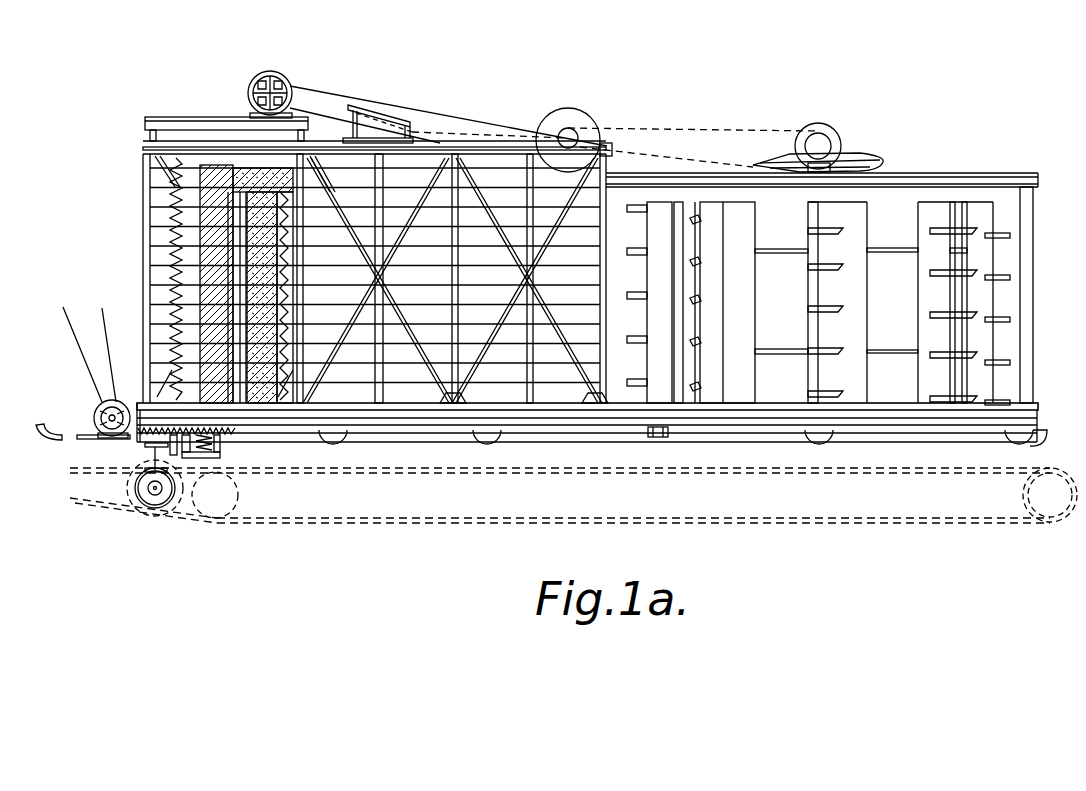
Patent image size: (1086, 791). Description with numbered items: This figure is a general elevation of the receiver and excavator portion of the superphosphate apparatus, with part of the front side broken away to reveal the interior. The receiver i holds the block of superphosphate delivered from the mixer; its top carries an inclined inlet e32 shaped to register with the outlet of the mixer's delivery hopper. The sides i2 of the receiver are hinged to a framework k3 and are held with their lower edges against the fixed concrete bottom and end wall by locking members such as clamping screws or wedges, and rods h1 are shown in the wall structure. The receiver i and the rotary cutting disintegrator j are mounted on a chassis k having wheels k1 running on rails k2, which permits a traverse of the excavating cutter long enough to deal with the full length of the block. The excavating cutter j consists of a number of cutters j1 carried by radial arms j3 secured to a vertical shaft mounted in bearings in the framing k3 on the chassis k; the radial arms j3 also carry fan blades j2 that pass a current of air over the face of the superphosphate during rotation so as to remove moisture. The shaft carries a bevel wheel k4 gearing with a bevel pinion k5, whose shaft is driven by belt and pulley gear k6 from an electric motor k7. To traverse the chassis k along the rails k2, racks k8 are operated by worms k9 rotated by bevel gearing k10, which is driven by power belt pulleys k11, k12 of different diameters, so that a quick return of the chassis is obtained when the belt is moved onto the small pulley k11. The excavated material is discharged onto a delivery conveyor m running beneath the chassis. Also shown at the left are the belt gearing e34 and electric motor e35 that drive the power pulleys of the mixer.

The receiver i is at (433, 233).
The side of the receiver i2 is at (168, 275).
The rods h1 is at (283, 405).
The electric motor k7 is at (278, 80).
The inlet e32 is at (385, 110).
The belt and pulley gear k6 is at (572, 128).
The framework k3 is at (608, 142).
The bevel pinion k5 is at (823, 132).
The bevel wheel k4 is at (876, 158).
The fan blades j2 is at (658, 208).
The rotary cutting disintegrator j is at (932, 213).
The cutters j1 is at (830, 262).
The radial arms j3 is at (890, 254).
The chassis k is at (1028, 418).
The wheels k1 is at (332, 442).
The rails k2 is at (50, 440).
The electric motor e35 is at (94, 416).
The belt gearing e34 is at (78, 353).
The racks k8 is at (230, 434).
The worms k9 is at (197, 455).
The bevel gearing k10 is at (145, 443).
The small power belt pulley k11 is at (147, 498).
The power belt pulley k12 is at (147, 515).
The delivery conveyor m is at (920, 525).